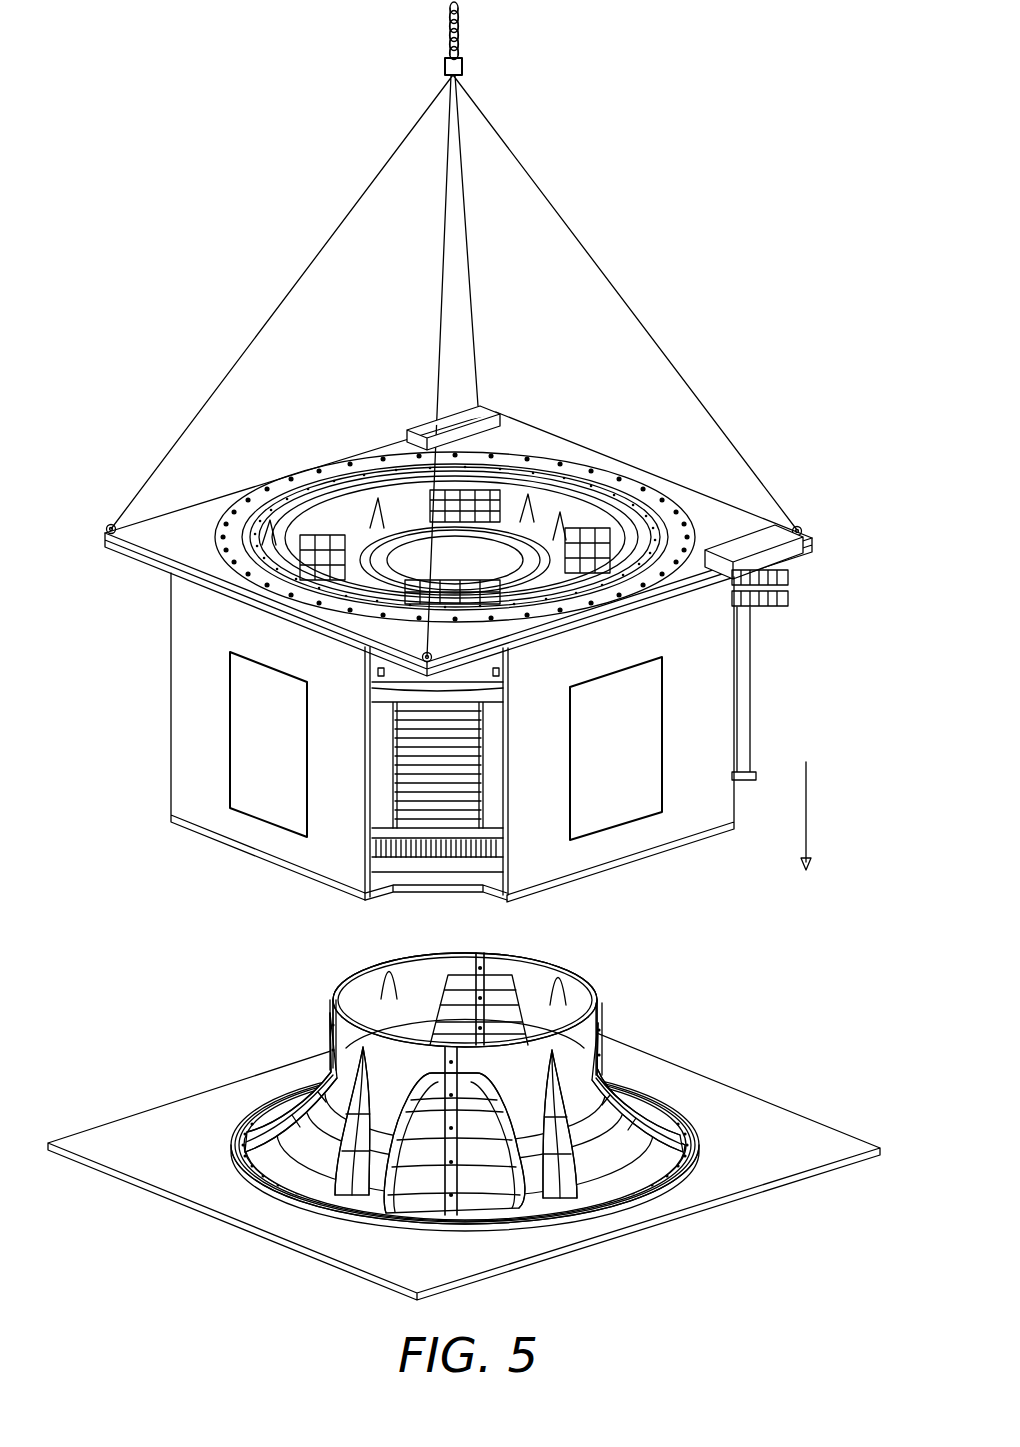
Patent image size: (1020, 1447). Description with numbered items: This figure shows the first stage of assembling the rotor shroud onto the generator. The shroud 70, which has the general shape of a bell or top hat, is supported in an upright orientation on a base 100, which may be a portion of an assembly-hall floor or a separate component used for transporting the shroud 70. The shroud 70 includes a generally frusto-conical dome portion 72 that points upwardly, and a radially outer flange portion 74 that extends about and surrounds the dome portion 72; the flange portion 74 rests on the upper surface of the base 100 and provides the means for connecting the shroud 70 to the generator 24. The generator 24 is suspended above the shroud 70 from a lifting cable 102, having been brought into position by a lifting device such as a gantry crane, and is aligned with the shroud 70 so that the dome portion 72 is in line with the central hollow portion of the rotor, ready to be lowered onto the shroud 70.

The lifting cable 102 is at (459, 22).
The generator 24 is at (602, 414).
The dome portion 72 is at (600, 1025).
The base 100 is at (790, 1112).
The flange portion 74 is at (675, 1173).
The shroud 70 is at (600, 1205).